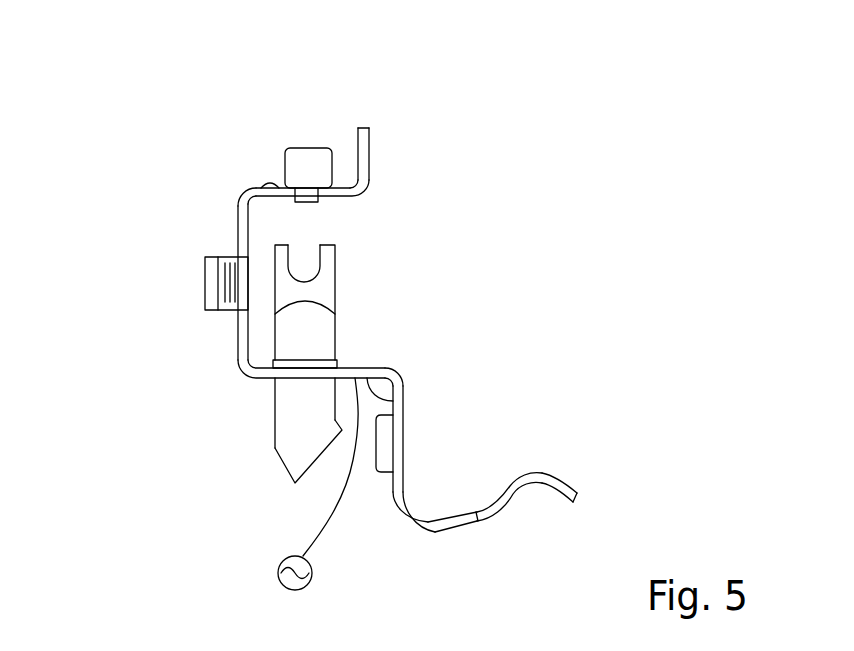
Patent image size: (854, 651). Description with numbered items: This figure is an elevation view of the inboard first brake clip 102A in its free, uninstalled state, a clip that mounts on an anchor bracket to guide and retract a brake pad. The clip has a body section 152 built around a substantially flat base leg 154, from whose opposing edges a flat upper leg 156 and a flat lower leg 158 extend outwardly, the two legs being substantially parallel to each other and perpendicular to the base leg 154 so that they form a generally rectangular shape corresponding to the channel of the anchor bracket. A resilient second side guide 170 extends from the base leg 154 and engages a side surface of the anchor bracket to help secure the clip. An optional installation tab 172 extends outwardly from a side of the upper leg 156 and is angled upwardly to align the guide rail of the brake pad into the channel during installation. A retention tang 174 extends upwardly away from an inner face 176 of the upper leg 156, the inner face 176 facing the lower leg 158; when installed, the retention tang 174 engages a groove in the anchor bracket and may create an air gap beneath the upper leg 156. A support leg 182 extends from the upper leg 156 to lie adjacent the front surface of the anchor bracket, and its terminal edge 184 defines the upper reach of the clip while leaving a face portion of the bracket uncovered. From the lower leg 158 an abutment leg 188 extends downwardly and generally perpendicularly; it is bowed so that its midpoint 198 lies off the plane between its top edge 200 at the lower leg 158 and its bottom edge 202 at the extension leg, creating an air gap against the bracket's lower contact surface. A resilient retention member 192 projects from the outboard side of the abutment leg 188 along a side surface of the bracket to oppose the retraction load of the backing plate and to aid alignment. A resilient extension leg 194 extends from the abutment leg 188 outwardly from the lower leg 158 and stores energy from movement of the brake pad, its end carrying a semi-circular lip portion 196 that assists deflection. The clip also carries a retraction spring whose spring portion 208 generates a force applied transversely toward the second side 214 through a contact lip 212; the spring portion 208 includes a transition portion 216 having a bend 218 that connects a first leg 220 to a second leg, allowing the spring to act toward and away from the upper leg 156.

The inboard first brake clip 102A is at (405, 38).
The body section 152 is at (448, 453).
The base leg 154 is at (237, 225).
The upper leg 156 is at (343, 187).
The lower leg 158 is at (372, 372).
The second side guide 170 is at (212, 287).
The installation tab 172 is at (307, 160).
The retention tang 174 is at (268, 183).
The inner face 176 is at (346, 197).
The support leg 182 is at (353, 148).
The terminal edge 184 is at (363, 127).
The abutment leg 188 is at (397, 494).
The retention member 192 is at (385, 472).
The extension leg 194 is at (478, 522).
The lip portion 196 is at (562, 472).
The midpoint 198 is at (405, 447).
The top edge 200 is at (398, 380).
The bottom edge 202 is at (420, 528).
The spring portion 208 is at (335, 255).
The contact lip 212 is at (315, 328).
The second side 214 is at (353, 378).
The transition portion 216 is at (236, 487).
The bend 218 is at (303, 475).
The first leg 220 is at (285, 420).